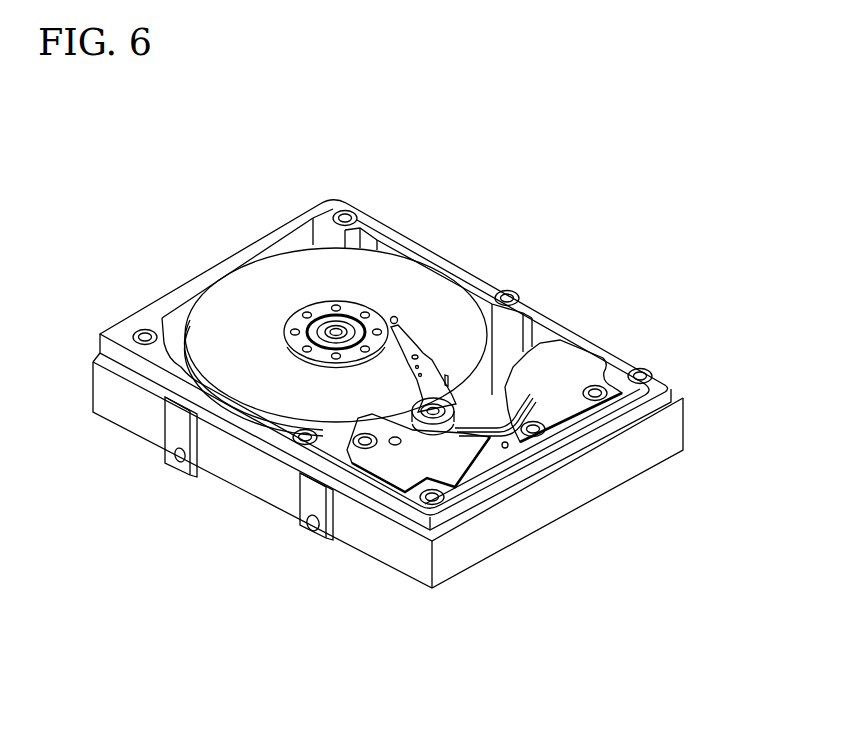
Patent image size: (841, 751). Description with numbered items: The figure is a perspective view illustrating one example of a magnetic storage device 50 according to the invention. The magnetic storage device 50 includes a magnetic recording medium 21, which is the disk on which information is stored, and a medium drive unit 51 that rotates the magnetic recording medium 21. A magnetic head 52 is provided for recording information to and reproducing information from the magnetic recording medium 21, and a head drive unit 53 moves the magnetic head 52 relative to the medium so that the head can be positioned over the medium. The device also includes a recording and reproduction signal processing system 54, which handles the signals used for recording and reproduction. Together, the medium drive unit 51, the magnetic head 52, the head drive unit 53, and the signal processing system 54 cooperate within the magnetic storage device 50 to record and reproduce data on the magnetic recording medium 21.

The magnetic storage device 50 is at (603, 197).
The magnetic recording medium 21 is at (380, 283).
The medium drive unit 51 is at (305, 308).
The magnetic head 52 is at (395, 318).
The head drive unit 53 is at (460, 448).
The recording and reproduction signal processing system 54 is at (578, 373).